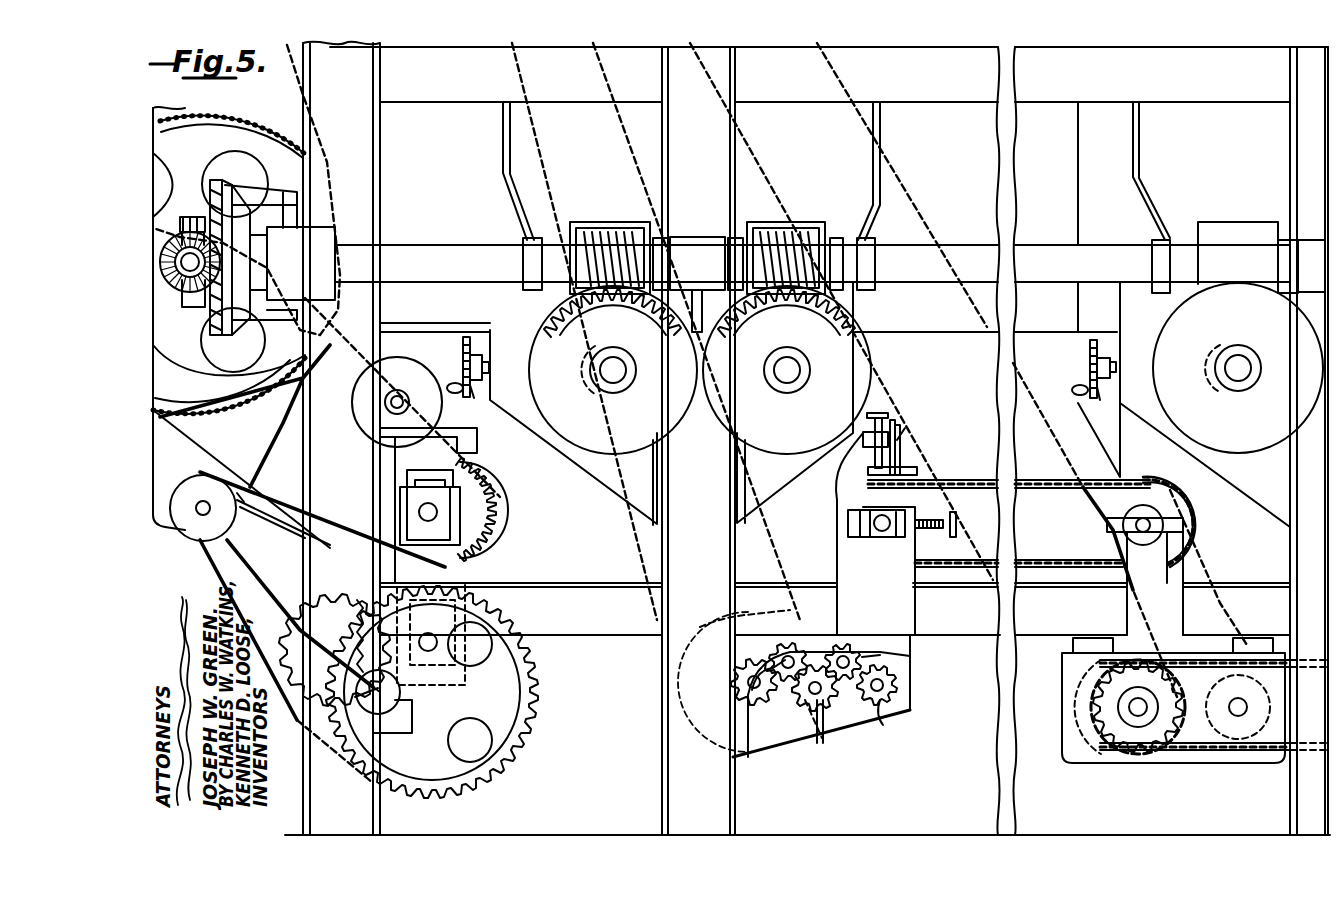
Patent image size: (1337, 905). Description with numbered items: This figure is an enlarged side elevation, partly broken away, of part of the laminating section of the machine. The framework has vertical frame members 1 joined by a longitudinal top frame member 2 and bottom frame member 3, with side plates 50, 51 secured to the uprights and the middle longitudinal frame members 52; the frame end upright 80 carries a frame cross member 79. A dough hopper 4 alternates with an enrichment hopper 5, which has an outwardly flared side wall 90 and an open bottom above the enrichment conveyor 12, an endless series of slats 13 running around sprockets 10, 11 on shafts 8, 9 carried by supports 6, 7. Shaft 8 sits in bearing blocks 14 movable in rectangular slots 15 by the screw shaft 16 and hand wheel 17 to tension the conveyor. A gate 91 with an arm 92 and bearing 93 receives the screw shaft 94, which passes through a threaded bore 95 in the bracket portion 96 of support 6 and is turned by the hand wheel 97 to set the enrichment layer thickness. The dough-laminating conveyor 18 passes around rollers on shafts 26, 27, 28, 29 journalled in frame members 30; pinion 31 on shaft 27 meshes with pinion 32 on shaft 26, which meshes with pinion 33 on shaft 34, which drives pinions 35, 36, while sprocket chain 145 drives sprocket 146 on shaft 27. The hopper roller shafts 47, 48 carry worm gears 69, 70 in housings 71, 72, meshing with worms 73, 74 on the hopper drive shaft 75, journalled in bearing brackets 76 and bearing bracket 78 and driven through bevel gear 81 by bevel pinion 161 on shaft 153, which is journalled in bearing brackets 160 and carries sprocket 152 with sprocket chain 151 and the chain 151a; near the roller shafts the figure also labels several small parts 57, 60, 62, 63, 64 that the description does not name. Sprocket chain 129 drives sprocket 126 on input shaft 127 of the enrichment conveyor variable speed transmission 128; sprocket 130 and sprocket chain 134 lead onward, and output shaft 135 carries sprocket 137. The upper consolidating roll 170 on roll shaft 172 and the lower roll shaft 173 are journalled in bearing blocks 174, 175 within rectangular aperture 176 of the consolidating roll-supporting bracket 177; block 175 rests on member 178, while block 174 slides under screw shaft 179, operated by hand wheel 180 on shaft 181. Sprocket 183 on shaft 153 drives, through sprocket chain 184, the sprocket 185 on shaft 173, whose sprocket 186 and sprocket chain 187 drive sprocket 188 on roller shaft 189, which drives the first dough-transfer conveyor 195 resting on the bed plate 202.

The vertical frame members 1 is at (722, 815).
The top frame member 2 is at (448, 108).
The bottom frame member 3 is at (972, 632).
The dough hopper 4 is at (503, 150).
The enrichment hopper 5 is at (1078, 172).
The support 6 is at (850, 578).
The support 7 is at (1168, 576).
The shaft 8 is at (883, 532).
The shaft 9 is at (1143, 532).
The sprocket 10 is at (905, 491).
The sprocket 11 is at (1104, 510).
The enrichment conveyor 12 is at (1143, 480).
The slats 13 is at (1178, 500).
The bearing blocks 14 is at (875, 532).
The rectangular slots 15 is at (848, 527).
The screw shaft 16 is at (922, 530).
The hand wheel 17 is at (953, 537).
The dough-laminating conveyor 18 is at (1255, 590).
The shaft 26 is at (788, 640).
The shaft 27 is at (746, 683).
The roller shaft 28 is at (846, 652).
The roller shaft 29 is at (898, 683).
The frame members 30 is at (910, 703).
The pinion 31 is at (829, 704).
The pinion 32 is at (808, 694).
The pinion 33 is at (820, 728).
The shaft 34 is at (803, 719).
The pinion 35 is at (880, 655).
The pinion 36 is at (883, 722).
The roller shaft 47 is at (618, 367).
The roller shaft 48 is at (792, 367).
The side plate 50 is at (597, 468).
The side plate 51 is at (786, 470).
The middle longitudinal frame members 52 is at (427, 315).
The shaft 57 is at (588, 374).
The block 60 is at (486, 362).
The lever 62 is at (476, 397).
The rack 63 is at (466, 337).
The knob 64 is at (455, 382).
The worm gear 69 is at (632, 318).
The worm gear 70 is at (806, 318).
The housing 71 is at (530, 377).
The housing 72 is at (812, 416).
The right-hand worm 73 is at (605, 225).
The left-hand worm 74 is at (772, 226).
The hopper drive shaft 75 is at (473, 256).
The bearing brackets 76 is at (695, 243).
The bearing bracket 78 is at (330, 240).
The frame cross member 79 is at (287, 192).
The frame end upright 80 is at (368, 192).
The bevel gear 81 is at (226, 202).
The outwardly flared side wall 90 is at (1105, 450).
The gate 91 is at (897, 432).
The arm 92 is at (902, 468).
The bearing 93 is at (868, 470).
The screw shaft 94 is at (866, 416).
The threaded bore 95 is at (862, 436).
The bracket portion 96 is at (845, 485).
The hand wheel 97 is at (898, 420).
The sprocket 126 is at (1063, 688).
The input shaft 127 is at (1130, 707).
The enrichment conveyor variable speed transmission 128 is at (1065, 745).
The sprocket chain 129 is at (920, 213).
The sprocket 130 is at (1176, 760).
The sprocket chain 134 is at (1215, 760).
The output shaft 135 is at (1240, 718).
The sprocket 137 is at (1272, 688).
The sprocket chain 145 is at (640, 545).
The sprocket 146 is at (702, 625).
The sprocket chain 151 is at (300, 83).
The chain 151a is at (205, 102).
The sprocket 152 is at (240, 112).
The shaft 153 is at (220, 172).
The bearing brackets 160 is at (190, 258).
The bevel pinion 161 is at (235, 338).
The upper consolidating roll 170 is at (498, 493).
The roll shaft 172 is at (418, 512).
The roll shaft 173 is at (428, 652).
The bearing block 174 is at (434, 537).
The bearing block 175 is at (440, 620).
The rectangular aperture 176 is at (498, 565).
The consolidating roll-supporting bracket 177 is at (385, 718).
The member 178 is at (372, 690).
The screw shaft 179 is at (430, 480).
The hand wheel 180 is at (370, 424).
The shaft 181 is at (400, 390).
The sprocket 183 is at (205, 365).
The sprocket chain 184 is at (200, 420).
The sprocket 185 is at (550, 716).
The sprocket 186 is at (356, 625).
The sprocket chain 187 is at (338, 533).
The sprocket 188 is at (200, 540).
The roller shaft 189 is at (200, 502).
The first dough-transfer conveyor 195 is at (283, 530).
The bed plate 202 is at (308, 545).